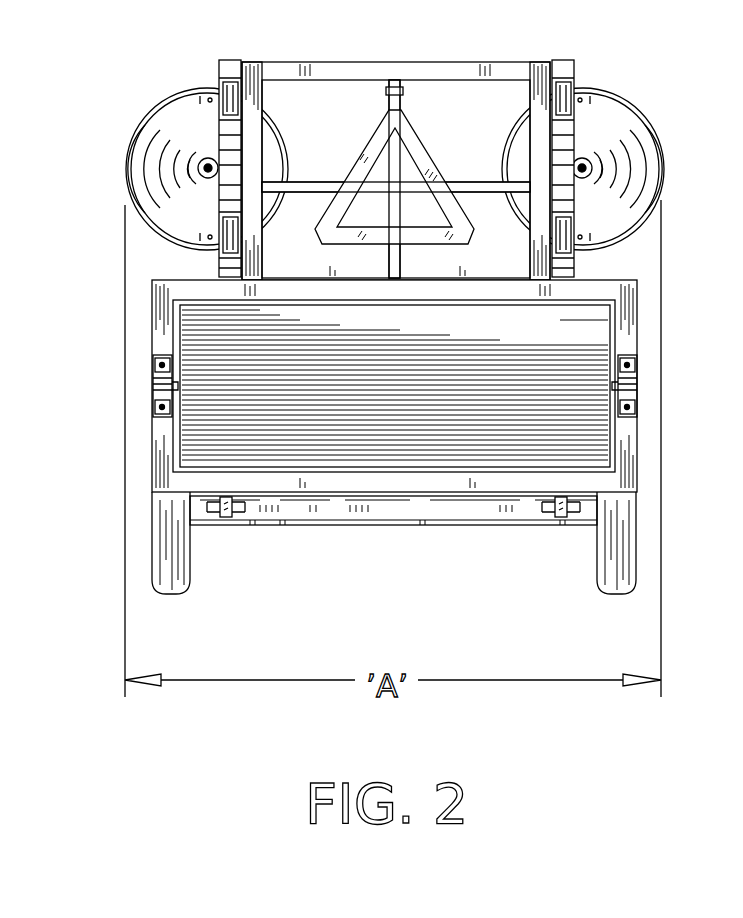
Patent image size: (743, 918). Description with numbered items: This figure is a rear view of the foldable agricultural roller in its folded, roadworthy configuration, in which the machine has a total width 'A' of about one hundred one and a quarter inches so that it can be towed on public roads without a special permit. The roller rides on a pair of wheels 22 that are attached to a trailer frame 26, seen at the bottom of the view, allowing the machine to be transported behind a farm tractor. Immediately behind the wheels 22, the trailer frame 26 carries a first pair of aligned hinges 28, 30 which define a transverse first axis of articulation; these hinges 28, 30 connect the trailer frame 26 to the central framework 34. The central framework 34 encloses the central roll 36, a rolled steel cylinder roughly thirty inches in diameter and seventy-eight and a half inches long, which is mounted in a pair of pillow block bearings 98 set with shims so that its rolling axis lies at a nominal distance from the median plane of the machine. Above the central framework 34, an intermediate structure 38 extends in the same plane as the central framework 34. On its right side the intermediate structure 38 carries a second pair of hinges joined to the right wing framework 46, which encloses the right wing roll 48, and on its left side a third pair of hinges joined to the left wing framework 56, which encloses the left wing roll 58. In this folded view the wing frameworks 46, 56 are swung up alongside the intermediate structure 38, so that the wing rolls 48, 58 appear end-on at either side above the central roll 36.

The wheels 22 is at (152, 537).
The trailer frame 26 is at (333, 512).
The first hinge 28 is at (548, 515).
The first hinge 30 is at (242, 517).
The central framework 34 is at (630, 340).
The central roll 36 is at (187, 347).
The intermediate structure 38 is at (410, 63).
The right wing framework 46 is at (226, 60).
The right wing roll 48 is at (162, 128).
The left wing framework 56 is at (577, 72).
The left wing roll 58 is at (622, 125).
The pillow block bearings 98 is at (637, 388).